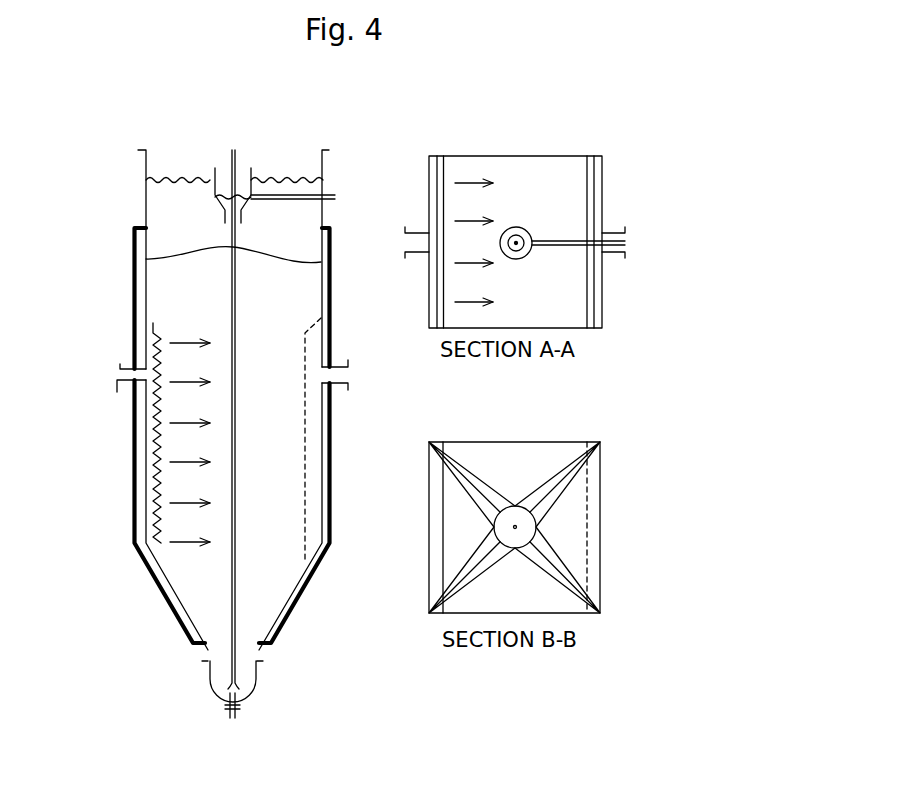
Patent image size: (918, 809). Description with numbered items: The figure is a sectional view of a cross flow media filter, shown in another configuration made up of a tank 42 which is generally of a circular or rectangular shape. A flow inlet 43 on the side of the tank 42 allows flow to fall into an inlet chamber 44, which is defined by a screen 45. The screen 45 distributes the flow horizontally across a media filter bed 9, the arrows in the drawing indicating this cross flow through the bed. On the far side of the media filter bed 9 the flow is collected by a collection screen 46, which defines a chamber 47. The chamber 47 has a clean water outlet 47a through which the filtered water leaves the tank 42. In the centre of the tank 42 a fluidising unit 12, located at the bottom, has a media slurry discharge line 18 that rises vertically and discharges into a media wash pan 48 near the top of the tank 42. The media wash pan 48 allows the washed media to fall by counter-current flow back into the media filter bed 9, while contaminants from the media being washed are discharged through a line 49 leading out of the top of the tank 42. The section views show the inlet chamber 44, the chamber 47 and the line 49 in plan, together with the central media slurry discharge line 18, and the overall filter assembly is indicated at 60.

The media filter bed 9 is at (181, 255).
The fluidising unit 12 is at (242, 699).
The media slurry discharge line 18 is at (239, 559).
The tank 42 is at (141, 286).
The flow inlet 43 is at (118, 365).
The inlet chamber 44 is at (435, 155).
The screen 45 is at (164, 325).
The collection screen 46 is at (300, 380).
The chamber 47 is at (595, 155).
The clean water outlet 47a is at (334, 370).
The media wash pan 48 is at (253, 165).
The line 49 is at (335, 189).
The settling vessel 60 is at (131, 521).